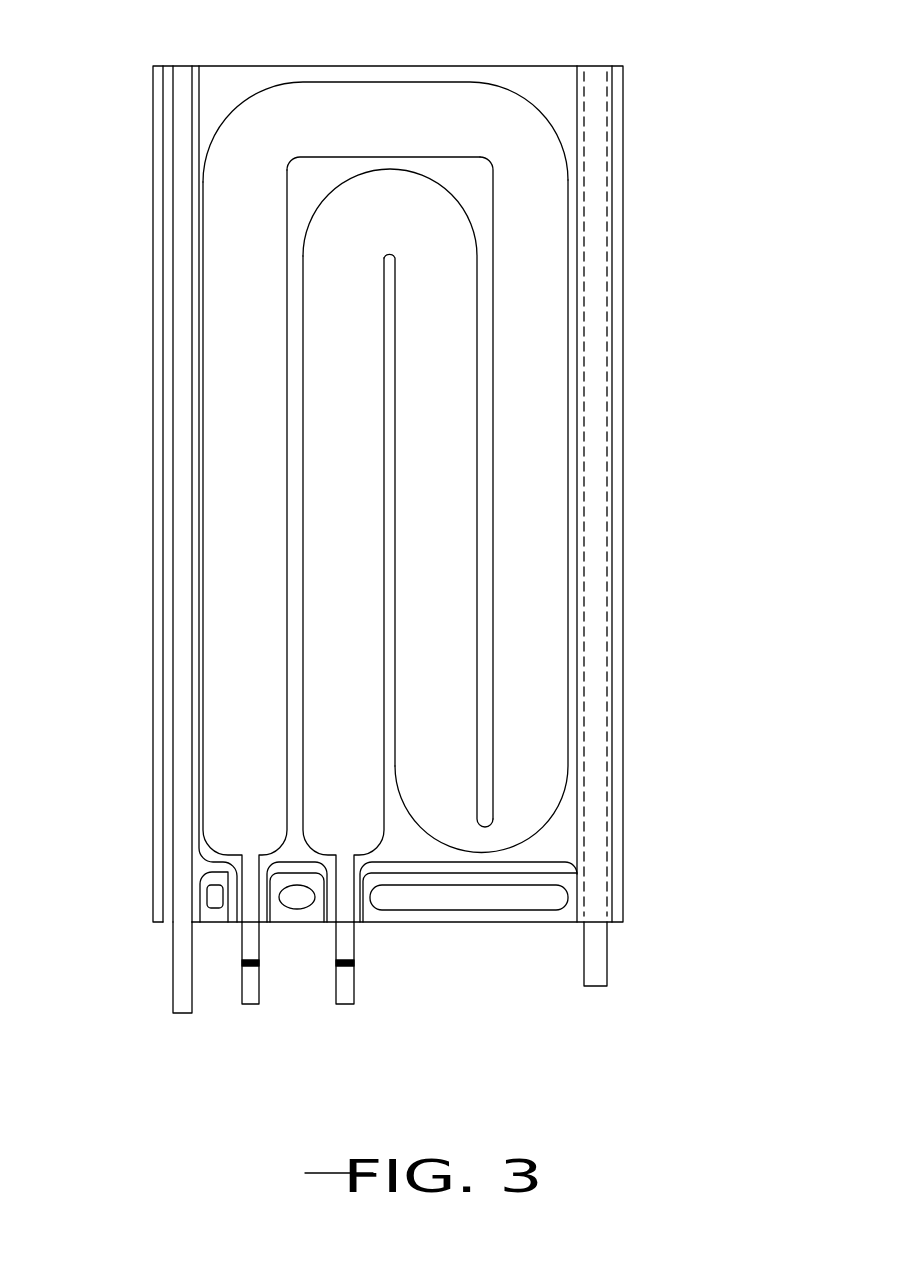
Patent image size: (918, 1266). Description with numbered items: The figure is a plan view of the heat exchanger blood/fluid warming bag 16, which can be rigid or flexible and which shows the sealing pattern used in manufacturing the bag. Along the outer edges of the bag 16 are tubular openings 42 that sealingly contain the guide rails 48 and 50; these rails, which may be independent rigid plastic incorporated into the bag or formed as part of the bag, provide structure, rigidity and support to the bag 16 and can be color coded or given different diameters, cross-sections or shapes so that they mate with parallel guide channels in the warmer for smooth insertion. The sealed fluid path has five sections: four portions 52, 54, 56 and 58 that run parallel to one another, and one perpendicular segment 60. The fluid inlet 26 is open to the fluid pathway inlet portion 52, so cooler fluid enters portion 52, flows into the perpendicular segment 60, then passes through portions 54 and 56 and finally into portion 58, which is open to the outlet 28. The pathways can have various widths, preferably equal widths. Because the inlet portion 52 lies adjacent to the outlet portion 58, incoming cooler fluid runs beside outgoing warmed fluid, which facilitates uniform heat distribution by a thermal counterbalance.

The heat exchanger blood/fluid warming bag 16 is at (485, 923).
The fluid inlet 26 is at (261, 988).
The outlet 28 is at (355, 986).
The tubular openings 42 is at (156, 77).
The guide rail 48 is at (183, 1013).
The guide rail 50 is at (600, 986).
The fluid pathway inlet portion 52 is at (223, 492).
The fluid pathway portion 54 is at (557, 423).
The fluid pathway portion 56 is at (460, 333).
The fluid pathway outlet portion 58 is at (315, 637).
The perpendicular segment 60 is at (393, 95).